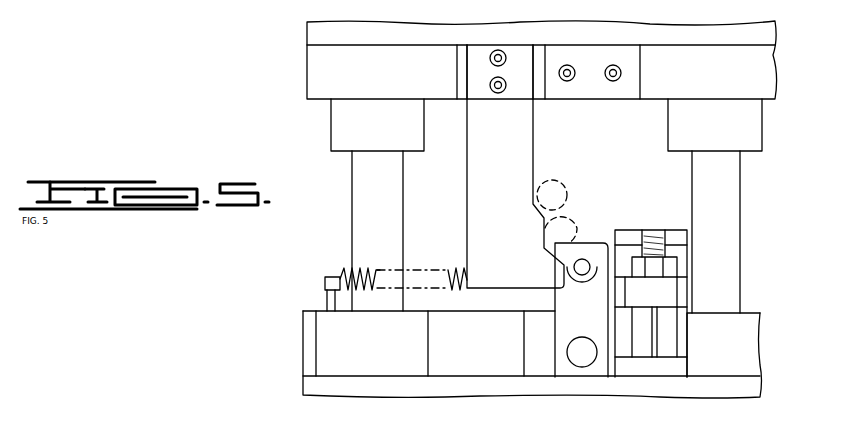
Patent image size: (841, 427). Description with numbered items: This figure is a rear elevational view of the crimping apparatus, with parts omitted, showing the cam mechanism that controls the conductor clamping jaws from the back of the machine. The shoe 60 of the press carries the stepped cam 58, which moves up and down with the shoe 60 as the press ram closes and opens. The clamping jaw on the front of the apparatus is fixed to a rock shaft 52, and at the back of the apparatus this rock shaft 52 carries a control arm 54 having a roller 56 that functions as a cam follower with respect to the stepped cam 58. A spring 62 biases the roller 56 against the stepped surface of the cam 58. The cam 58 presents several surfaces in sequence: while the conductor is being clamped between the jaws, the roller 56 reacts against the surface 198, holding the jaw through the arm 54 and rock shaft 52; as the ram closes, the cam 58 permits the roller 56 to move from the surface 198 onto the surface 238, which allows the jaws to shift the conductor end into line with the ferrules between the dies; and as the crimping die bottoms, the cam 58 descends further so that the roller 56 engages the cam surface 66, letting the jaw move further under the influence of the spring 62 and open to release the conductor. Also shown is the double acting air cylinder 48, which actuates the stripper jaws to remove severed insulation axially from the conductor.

The shoe 60 is at (315, 67).
The cam surface 66 is at (533, 144).
The stepped cam 58 is at (478, 188).
The cam surface 238 is at (548, 230).
The control arm 54 is at (598, 246).
The roller 56 is at (587, 280).
The rock shaft 52 is at (583, 361).
The double acting air cylinder 48 is at (622, 250).
The cam surface 198 is at (563, 295).
The spring 62 is at (455, 270).